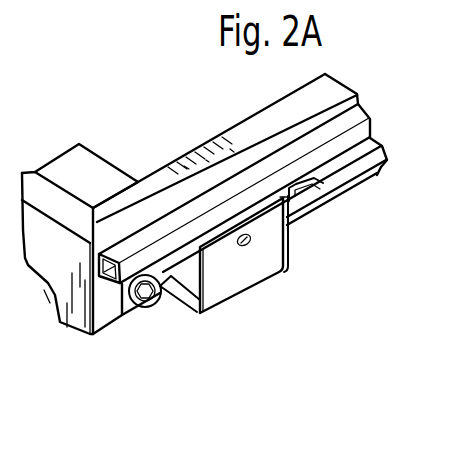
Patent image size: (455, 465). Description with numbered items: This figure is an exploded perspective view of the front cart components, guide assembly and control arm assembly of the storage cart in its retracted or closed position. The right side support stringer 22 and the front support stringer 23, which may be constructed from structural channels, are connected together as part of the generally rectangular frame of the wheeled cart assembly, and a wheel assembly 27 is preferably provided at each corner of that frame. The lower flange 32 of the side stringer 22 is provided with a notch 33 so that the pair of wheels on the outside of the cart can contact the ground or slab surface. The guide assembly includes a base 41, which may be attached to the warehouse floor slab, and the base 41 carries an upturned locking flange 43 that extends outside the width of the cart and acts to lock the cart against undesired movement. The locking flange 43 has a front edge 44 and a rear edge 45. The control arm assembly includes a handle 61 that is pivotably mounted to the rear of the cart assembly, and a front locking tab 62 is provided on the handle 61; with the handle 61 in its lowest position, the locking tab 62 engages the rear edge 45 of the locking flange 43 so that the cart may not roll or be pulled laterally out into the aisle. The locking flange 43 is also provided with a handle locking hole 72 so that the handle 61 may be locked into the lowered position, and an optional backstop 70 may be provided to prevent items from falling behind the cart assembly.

The right side support stringer 22 is at (258, 191).
The front support stringer 23 is at (57, 282).
The wheel assembly 27 is at (113, 376).
The lower flange 32 is at (368, 133).
The notch 33 is at (163, 298).
The base 41 is at (254, 289).
The locking flange 43 is at (263, 258).
The front edge 44 is at (208, 298).
The rear edge 45 is at (290, 238).
The handle 61 is at (193, 210).
The front locking tab 62 is at (313, 182).
The backstop 70 is at (6, 51).
The handle locking hole 72 is at (252, 243).